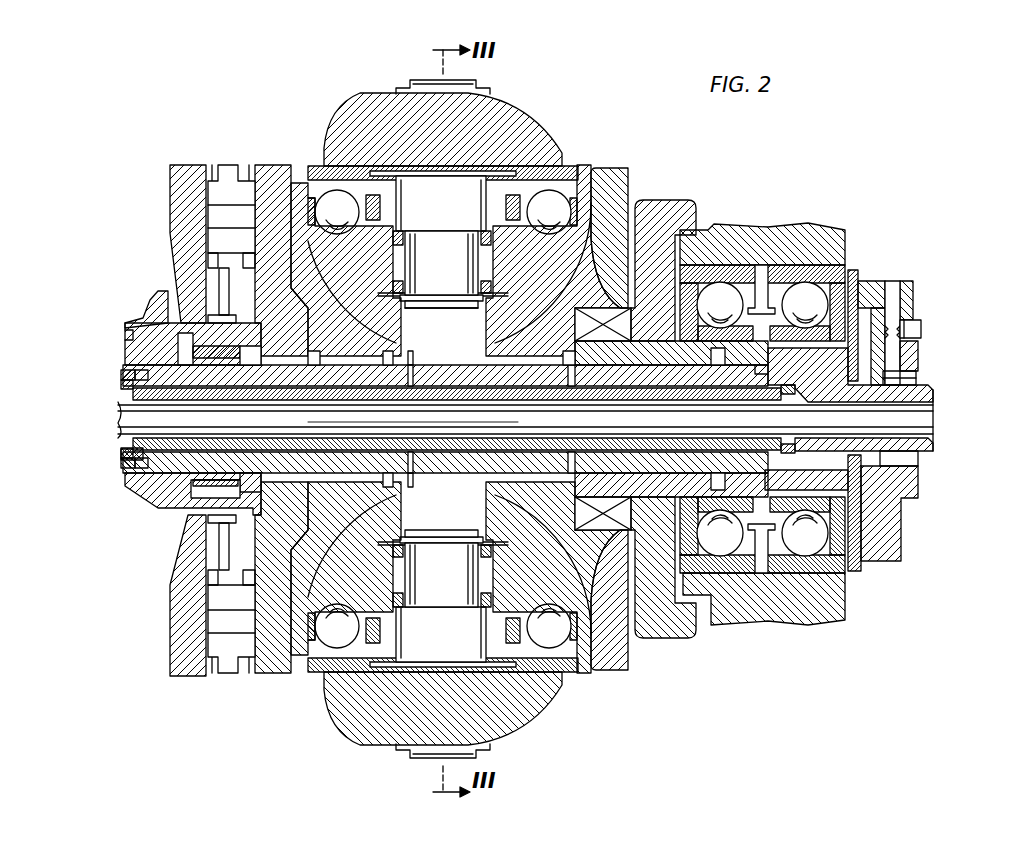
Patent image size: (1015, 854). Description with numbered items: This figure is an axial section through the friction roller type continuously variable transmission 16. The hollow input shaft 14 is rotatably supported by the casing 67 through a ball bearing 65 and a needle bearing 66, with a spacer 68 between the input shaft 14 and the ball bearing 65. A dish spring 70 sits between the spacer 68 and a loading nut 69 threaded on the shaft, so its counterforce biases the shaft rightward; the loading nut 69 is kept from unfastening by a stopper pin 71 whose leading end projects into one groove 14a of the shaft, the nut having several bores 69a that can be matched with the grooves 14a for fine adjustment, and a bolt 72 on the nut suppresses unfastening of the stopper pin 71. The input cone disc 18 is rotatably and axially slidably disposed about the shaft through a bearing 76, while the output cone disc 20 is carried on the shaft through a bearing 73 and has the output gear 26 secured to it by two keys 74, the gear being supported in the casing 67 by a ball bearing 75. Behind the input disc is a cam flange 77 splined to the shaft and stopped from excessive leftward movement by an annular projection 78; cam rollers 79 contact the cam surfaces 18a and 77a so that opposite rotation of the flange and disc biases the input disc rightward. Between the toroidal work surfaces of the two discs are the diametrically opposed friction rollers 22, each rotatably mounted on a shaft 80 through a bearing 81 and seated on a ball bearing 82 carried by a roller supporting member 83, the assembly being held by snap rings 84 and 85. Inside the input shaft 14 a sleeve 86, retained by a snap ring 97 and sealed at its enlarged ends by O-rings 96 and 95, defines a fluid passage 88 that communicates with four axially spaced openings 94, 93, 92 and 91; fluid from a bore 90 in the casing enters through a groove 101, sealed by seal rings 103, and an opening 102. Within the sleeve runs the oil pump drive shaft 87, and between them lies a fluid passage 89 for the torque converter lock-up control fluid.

The input shaft 14 is at (925, 386).
The groove 14a is at (908, 372).
The friction roller type continuously variable transmission 16 is at (313, 83).
The input cone disc 18 is at (268, 152).
The cam surface 18a is at (240, 152).
The output cone disc 20 is at (600, 160).
The friction roller 22 is at (358, 298).
The output gear 26 is at (658, 192).
The ball bearing 65 is at (796, 290).
The needle bearing 66 is at (185, 327).
The casing 67 is at (745, 240).
The spacer 68 is at (845, 272).
The loading nut 69 is at (905, 470).
The bore 69a is at (906, 290).
The dish spring 70 is at (874, 276).
The stopper pin 71 is at (910, 352).
The bolt 72 is at (913, 322).
The bearing 73 is at (394, 303).
The key 74 is at (595, 493).
The ball bearing 75 is at (712, 290).
The bearing 76 is at (347, 346).
The cam flange 77 is at (178, 152).
The cam surface 77a is at (202, 152).
The annular projection 78 is at (242, 340).
The cam roller 79 is at (222, 168).
The shaft 80 is at (440, 185).
The bearing 81 is at (475, 258).
The ball bearing 82 is at (543, 198).
The roller supporting member 83 is at (538, 118).
The snap ring 84 is at (488, 296).
The snap ring 85 is at (468, 78).
The sleeve 86 is at (120, 388).
The drive shaft 87 is at (124, 410).
The fluid passage 88 is at (451, 376).
The fluid passage 89 is at (434, 440).
The bore 90 is at (126, 320).
The opening 91 is at (753, 368).
The opening 92 is at (550, 390).
The opening 93 is at (403, 357).
The opening 94 is at (198, 374).
The O-ring 95 is at (778, 434).
The O-ring 96 is at (116, 430).
The snap ring 97 is at (114, 380).
The groove 101 is at (118, 326).
The opening 102 is at (118, 364).
The seal ring 103 is at (118, 370).